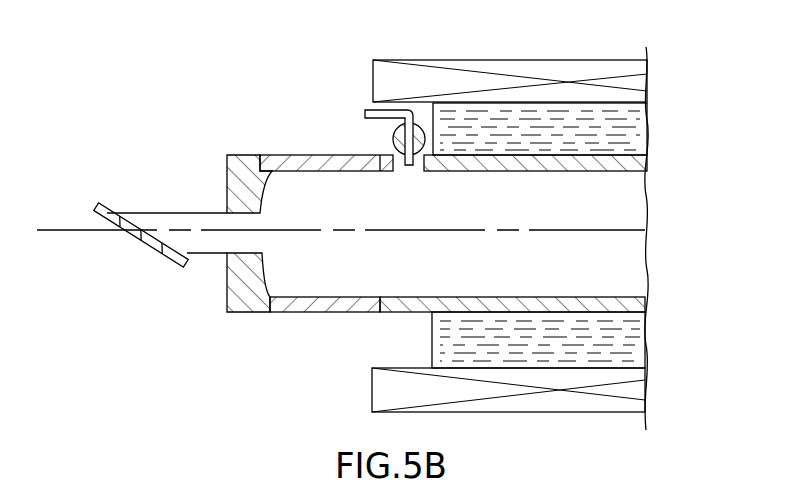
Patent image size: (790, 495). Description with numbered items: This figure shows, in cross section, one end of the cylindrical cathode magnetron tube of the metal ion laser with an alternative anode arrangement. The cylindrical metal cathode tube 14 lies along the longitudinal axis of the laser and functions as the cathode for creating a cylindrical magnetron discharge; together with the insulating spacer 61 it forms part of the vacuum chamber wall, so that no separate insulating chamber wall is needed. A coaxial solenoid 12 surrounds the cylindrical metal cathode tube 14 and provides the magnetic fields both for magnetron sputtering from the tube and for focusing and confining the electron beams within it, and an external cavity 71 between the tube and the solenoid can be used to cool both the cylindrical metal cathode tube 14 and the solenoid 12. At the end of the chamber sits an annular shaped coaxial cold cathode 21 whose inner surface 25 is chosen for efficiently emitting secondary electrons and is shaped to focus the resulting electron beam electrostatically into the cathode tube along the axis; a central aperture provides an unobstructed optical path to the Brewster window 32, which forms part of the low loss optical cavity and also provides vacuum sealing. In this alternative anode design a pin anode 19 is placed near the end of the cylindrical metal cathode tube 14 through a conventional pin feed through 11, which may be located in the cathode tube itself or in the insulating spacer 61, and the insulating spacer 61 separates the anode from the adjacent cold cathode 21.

The pin feed through 11 is at (392, 140).
The coaxial solenoid 12 is at (532, 62).
The cylindrical metal cathode tube 14 is at (627, 307).
The pin anode 19 is at (393, 155).
The annular shaped coaxial cold cathode 21 is at (252, 283).
The inner surface 25 is at (227, 188).
The Brewster window 32 is at (152, 250).
The insulating spacer 61 is at (332, 302).
The external cavity 71 is at (638, 122).